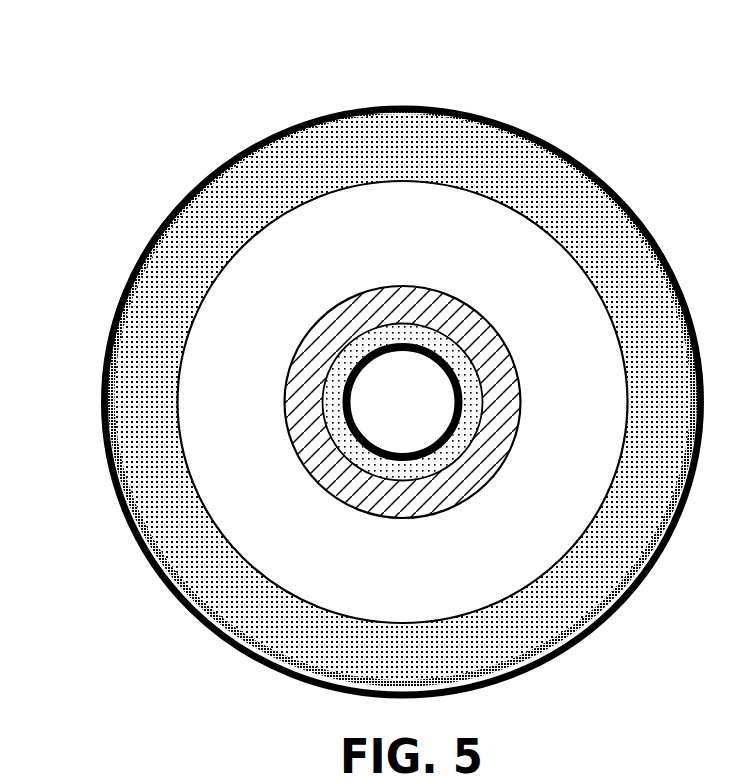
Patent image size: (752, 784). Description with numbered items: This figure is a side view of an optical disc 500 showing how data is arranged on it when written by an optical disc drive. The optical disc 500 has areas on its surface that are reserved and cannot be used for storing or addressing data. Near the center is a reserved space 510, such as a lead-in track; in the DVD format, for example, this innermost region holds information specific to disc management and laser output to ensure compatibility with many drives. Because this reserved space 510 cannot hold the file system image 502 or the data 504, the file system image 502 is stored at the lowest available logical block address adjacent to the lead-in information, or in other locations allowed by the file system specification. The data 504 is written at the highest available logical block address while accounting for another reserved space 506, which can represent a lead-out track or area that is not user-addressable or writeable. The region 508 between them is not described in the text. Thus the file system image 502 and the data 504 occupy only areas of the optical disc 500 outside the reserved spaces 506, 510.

The optical disc 500 is at (364, 355).
The file system image 502 is at (403, 285).
The data 504 is at (140, 385).
The reserved space 506 is at (135, 270).
The intermediate region 508 is at (523, 252).
The reserved space 510 is at (378, 480).